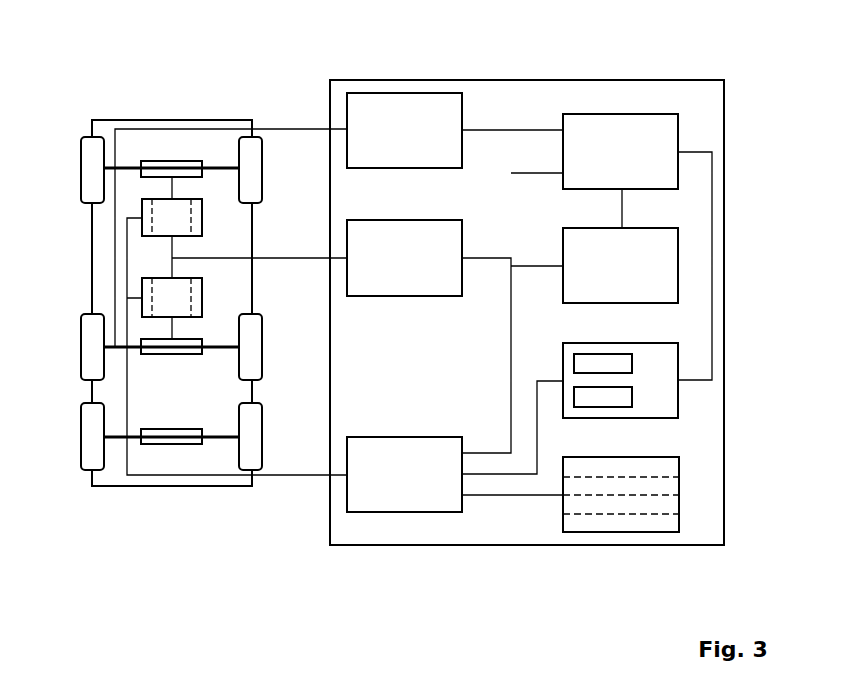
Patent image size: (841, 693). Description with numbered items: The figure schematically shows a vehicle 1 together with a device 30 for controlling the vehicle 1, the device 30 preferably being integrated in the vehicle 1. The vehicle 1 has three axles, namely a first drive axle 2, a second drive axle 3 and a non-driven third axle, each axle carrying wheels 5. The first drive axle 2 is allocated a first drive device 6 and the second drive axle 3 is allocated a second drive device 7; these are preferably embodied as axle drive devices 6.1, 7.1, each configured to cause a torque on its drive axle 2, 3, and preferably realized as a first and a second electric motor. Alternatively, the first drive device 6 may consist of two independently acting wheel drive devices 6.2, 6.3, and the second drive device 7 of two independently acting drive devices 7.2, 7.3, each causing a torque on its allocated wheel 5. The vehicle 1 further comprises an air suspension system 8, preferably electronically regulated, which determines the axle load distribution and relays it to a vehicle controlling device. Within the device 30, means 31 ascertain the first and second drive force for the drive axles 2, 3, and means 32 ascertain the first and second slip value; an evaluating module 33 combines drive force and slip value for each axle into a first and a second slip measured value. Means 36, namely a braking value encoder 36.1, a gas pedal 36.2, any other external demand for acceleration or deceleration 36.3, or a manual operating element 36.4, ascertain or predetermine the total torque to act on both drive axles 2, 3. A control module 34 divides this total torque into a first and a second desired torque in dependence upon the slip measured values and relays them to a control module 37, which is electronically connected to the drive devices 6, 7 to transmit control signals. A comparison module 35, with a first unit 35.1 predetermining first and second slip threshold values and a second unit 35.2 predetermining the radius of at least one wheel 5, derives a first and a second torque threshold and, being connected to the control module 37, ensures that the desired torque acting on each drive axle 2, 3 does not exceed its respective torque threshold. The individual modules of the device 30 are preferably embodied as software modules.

The vehicle 1 is at (119, 120).
The first drive axle 2 is at (228, 166).
The second drive axle 3 is at (220, 349).
The wheel 5 is at (81, 168).
The first drive device 6 is at (232, 238).
The axle drive device 6.1 is at (180, 218).
The wheel drive device 6.2 is at (145, 210).
The wheel drive device 6.3 is at (199, 197).
The second drive device 7 is at (108, 296).
The axle drive device 7.1 is at (163, 288).
The drive device 7.2 is at (143, 308).
The drive device 7.3 is at (195, 300).
The air suspension system 8 is at (155, 160).
The device for controlling the vehicle 30 is at (530, 80).
The means for ascertaining first and second drive force 31 is at (404, 296).
The means for ascertaining first and second slip value 32 is at (404, 93).
The evaluating module 33 is at (678, 128).
The control module 34 is at (678, 263).
The comparison module 35 is at (678, 388).
The first unit 35.1 is at (632, 365).
The second unit 35.2 is at (632, 397).
The means for ascertaining or predetermining a total torque 36 is at (623, 532).
The braking value encoder 36.1 is at (670, 468).
The gas pedal 36.2 is at (670, 485).
The external demand for acceleration or deceleration 36.3 is at (578, 504).
The manual operating element 36.4 is at (670, 520).
The control module 37 is at (404, 512).